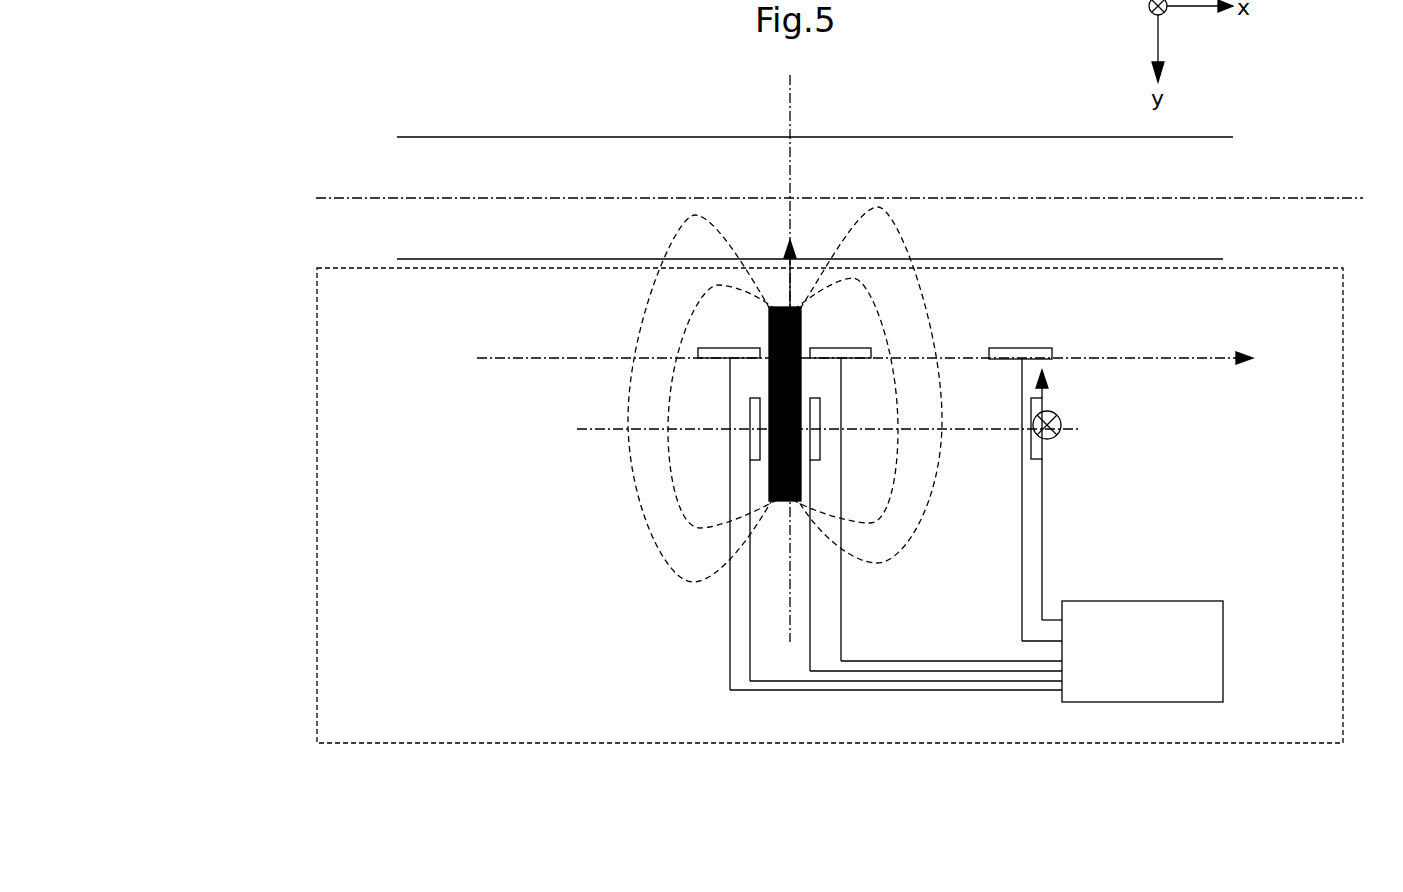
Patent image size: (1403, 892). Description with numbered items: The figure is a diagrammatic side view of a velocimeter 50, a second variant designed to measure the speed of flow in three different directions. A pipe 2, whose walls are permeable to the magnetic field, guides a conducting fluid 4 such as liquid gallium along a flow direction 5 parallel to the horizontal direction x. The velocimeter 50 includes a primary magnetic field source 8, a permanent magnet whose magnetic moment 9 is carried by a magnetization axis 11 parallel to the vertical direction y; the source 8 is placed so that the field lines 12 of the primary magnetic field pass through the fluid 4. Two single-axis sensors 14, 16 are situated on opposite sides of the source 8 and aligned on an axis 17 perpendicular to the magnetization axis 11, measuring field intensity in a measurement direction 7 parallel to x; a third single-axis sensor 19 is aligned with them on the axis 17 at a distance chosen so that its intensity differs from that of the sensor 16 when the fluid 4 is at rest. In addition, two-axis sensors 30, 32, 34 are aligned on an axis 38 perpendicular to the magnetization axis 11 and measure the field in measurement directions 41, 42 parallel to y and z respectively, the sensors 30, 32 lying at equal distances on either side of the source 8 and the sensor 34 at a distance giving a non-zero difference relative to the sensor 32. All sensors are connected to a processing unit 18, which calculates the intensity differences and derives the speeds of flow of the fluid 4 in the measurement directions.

The pipe 2 is at (620, 137).
The conducting fluid 4 is at (503, 158).
The flow direction 5 is at (362, 198).
The measurement direction 7 is at (1256, 355).
The primary magnetic field source 8 is at (802, 338).
The magnetic moment 9 is at (787, 285).
The magnetization axis 11 is at (790, 97).
The field lines 12 is at (673, 488).
The single-axis sensor 14 is at (698, 352).
The single-axis sensor 16 is at (869, 348).
The axis 17 is at (1140, 356).
The processing unit 18 is at (1158, 663).
The third single-axis sensor 19 is at (1012, 362).
The two-axis sensor 30 is at (750, 438).
The two-axis sensor 32 is at (821, 437).
The two-axis sensor 34 is at (1031, 452).
The axis 38 is at (585, 428).
The measurement direction 41 is at (1045, 385).
The measurement direction 42 is at (1060, 432).
The velocimeter 50 is at (310, 260).